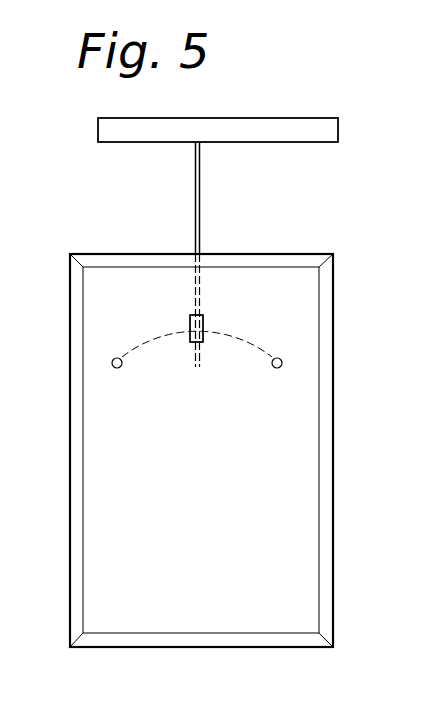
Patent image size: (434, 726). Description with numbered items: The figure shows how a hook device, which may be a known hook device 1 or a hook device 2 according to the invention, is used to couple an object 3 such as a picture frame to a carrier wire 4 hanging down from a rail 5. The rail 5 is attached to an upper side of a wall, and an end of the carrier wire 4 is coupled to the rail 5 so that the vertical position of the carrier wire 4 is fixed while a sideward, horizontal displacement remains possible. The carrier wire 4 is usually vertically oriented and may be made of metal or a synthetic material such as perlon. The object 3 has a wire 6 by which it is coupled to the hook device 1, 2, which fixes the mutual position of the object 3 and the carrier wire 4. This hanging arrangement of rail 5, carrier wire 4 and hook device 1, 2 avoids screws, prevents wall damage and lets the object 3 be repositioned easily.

The known hook device 1 is at (202, 320).
The hook device 2 is at (196, 328).
The object 3 is at (327, 409).
The carrier wire 4 is at (196, 200).
The rail 5 is at (103, 127).
The wire 6 is at (142, 340).